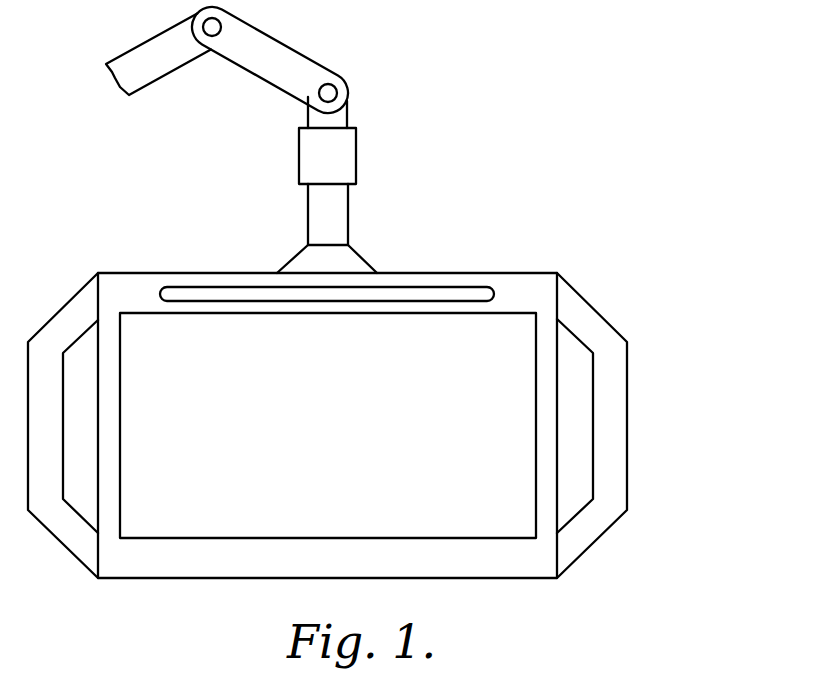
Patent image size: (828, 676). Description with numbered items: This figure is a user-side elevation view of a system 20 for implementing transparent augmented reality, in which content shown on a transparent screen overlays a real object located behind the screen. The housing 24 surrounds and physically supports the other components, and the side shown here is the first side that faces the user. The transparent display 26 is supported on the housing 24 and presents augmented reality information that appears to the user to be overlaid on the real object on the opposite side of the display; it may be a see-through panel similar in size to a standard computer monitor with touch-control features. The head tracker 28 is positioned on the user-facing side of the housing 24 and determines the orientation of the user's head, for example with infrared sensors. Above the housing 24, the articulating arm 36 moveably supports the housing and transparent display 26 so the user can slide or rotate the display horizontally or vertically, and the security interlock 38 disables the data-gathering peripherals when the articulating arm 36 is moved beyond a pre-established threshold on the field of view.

The system 20 is at (588, 217).
The housing 24 is at (145, 565).
The transparent display 26 is at (498, 523).
The head tracker 28 is at (188, 297).
The articulating arm 36 is at (302, 67).
The security interlock 38 is at (350, 155).